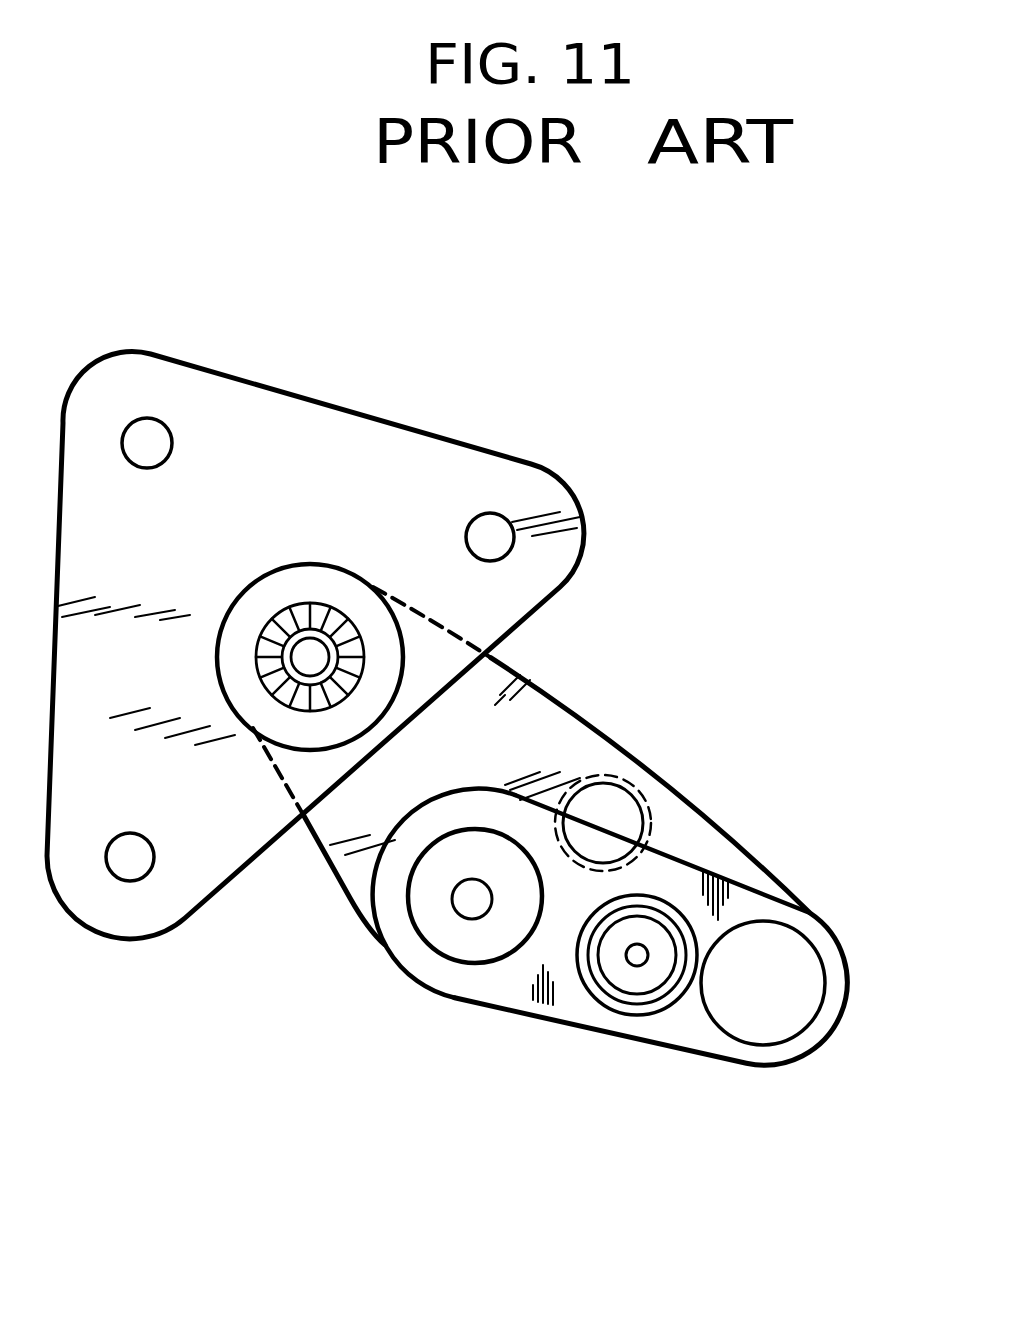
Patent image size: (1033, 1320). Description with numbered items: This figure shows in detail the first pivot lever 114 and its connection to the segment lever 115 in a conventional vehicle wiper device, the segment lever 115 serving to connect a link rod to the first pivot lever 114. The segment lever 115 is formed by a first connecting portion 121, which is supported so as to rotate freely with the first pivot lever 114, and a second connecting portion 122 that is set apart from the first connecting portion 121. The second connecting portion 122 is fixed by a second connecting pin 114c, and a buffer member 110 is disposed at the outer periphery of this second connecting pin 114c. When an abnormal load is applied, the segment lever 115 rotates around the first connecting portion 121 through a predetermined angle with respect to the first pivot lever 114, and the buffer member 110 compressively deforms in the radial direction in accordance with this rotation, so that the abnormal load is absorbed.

The buffer member 110 is at (462, 945).
The first pivot lever 114 is at (532, 707).
The second connecting pin 114c is at (460, 903).
The segment lever 115 is at (410, 962).
The first connecting portion 121 is at (763, 1068).
The second connecting portion 122 is at (412, 871).